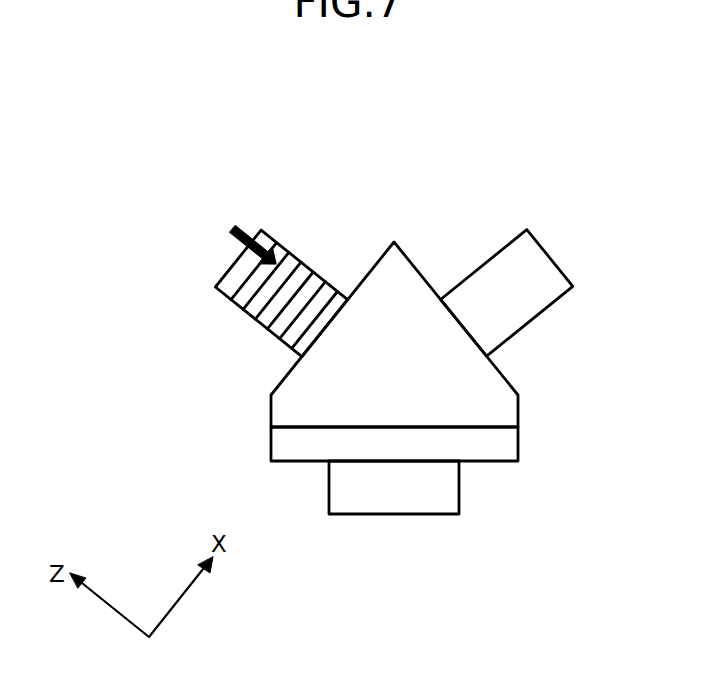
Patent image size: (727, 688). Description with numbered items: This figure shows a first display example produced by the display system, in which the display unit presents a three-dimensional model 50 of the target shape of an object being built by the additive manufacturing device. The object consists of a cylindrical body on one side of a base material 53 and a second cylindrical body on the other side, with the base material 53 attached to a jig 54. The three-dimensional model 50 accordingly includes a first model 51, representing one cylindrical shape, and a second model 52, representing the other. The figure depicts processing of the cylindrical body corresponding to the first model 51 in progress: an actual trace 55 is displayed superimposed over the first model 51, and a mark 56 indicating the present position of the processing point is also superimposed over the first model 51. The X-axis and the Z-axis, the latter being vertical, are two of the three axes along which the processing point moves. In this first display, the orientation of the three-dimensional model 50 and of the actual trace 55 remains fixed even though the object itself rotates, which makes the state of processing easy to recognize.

The 3D model 50 is at (487, 108).
The first model 51 is at (288, 247).
The second model 52 is at (498, 250).
The base material 53 is at (492, 393).
The jig 54 is at (528, 425).
The actual trace 55 is at (253, 293).
The mark 56 is at (244, 228).